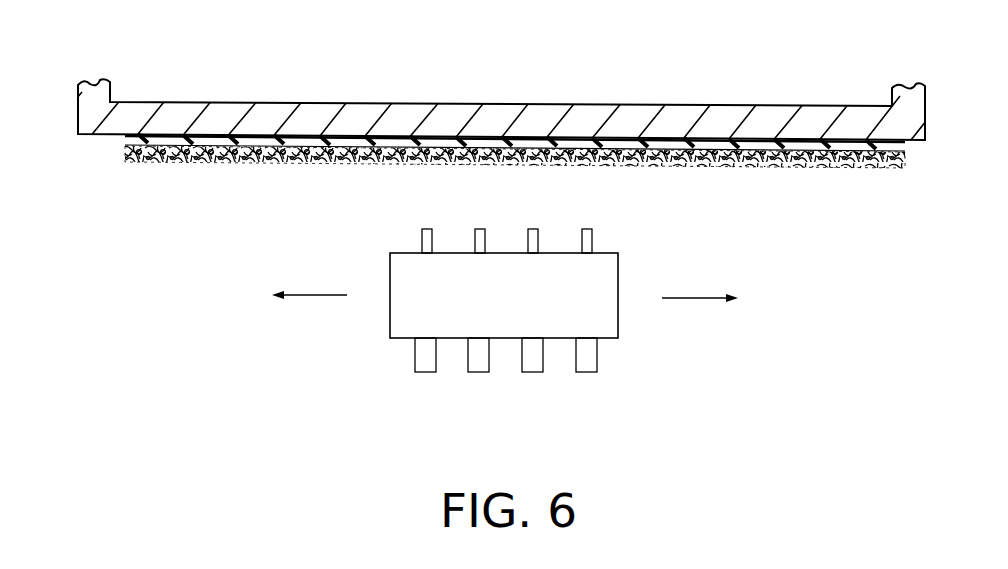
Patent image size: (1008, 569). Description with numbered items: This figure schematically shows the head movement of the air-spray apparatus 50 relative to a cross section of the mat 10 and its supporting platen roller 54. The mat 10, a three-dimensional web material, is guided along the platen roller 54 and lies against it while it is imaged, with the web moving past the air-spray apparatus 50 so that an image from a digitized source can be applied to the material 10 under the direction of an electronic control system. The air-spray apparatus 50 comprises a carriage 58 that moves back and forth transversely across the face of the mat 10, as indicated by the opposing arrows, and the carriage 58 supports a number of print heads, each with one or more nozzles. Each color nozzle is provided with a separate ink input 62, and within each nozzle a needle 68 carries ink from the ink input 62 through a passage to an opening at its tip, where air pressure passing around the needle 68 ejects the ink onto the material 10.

The mat 10 is at (210, 163).
The platen roller 54 is at (355, 112).
The air-spray apparatus 50 is at (505, 322).
The carriage 58 is at (610, 319).
The ink input 62 is at (478, 377).
The needle 68 is at (480, 229).